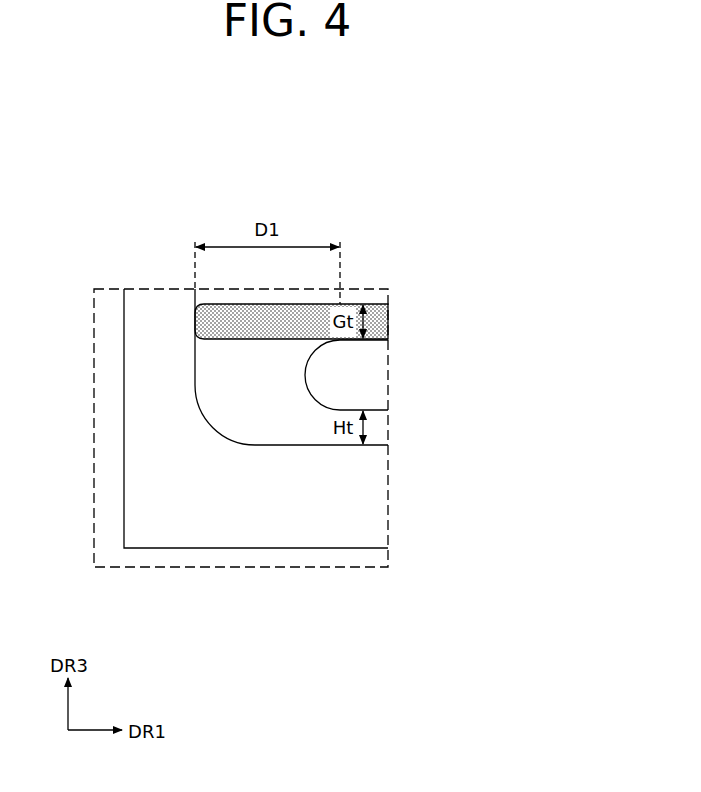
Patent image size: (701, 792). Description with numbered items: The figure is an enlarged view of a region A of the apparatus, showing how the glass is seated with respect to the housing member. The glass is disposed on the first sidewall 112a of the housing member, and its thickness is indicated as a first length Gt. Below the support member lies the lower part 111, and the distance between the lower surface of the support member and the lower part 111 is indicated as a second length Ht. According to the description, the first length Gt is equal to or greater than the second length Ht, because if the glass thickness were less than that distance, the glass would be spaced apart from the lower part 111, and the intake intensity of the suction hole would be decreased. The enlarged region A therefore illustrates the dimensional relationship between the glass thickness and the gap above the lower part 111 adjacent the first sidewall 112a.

The region A is at (398, 200).
The lower part 111 is at (324, 445).
The first sidewall 112a is at (215, 423).